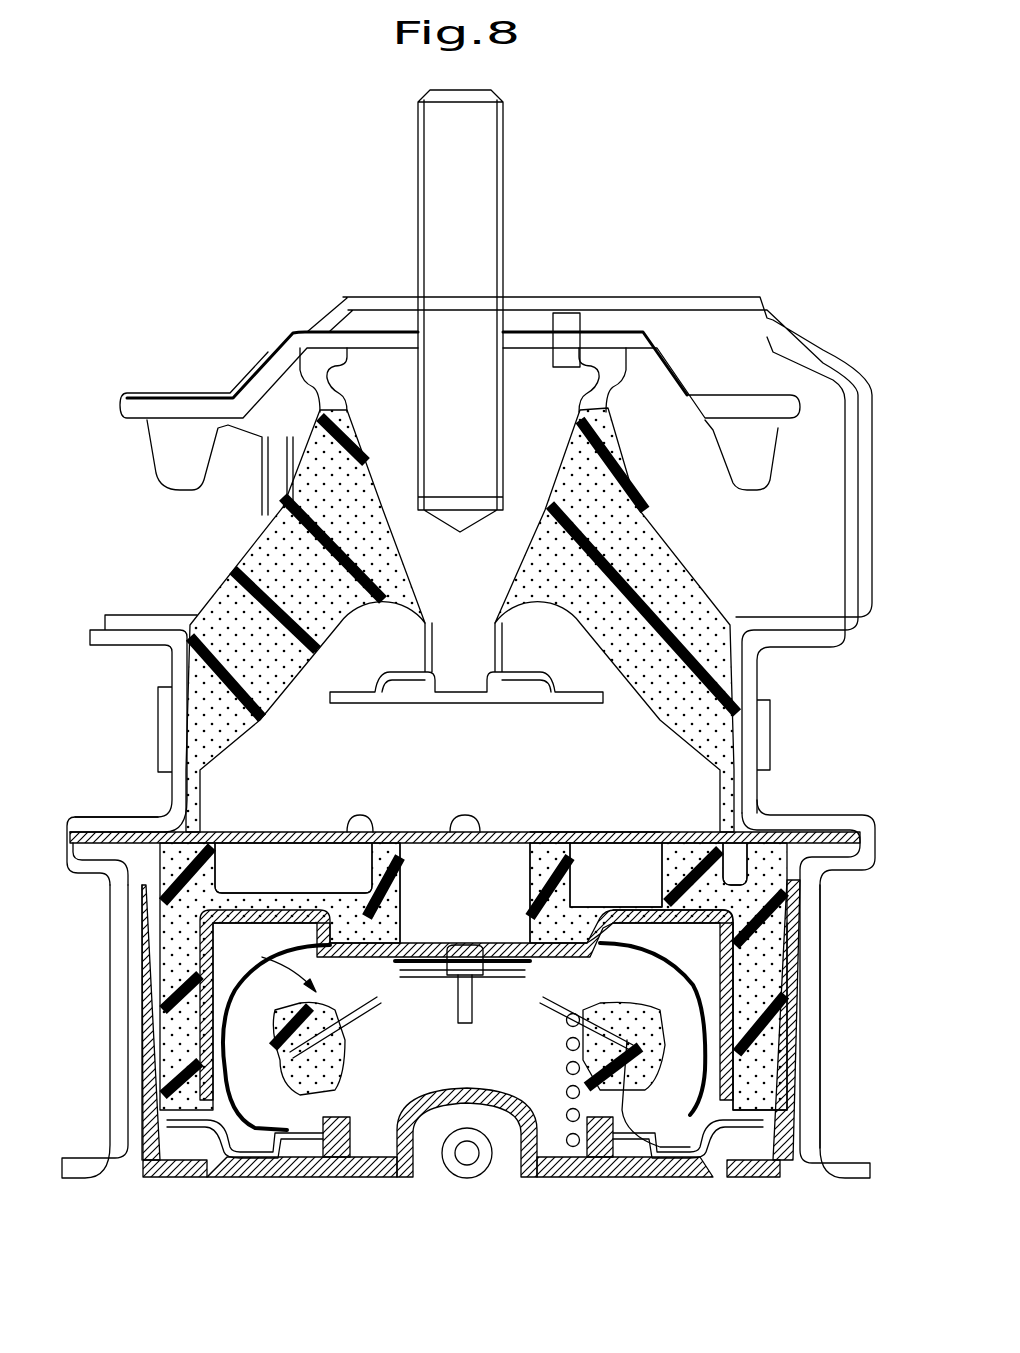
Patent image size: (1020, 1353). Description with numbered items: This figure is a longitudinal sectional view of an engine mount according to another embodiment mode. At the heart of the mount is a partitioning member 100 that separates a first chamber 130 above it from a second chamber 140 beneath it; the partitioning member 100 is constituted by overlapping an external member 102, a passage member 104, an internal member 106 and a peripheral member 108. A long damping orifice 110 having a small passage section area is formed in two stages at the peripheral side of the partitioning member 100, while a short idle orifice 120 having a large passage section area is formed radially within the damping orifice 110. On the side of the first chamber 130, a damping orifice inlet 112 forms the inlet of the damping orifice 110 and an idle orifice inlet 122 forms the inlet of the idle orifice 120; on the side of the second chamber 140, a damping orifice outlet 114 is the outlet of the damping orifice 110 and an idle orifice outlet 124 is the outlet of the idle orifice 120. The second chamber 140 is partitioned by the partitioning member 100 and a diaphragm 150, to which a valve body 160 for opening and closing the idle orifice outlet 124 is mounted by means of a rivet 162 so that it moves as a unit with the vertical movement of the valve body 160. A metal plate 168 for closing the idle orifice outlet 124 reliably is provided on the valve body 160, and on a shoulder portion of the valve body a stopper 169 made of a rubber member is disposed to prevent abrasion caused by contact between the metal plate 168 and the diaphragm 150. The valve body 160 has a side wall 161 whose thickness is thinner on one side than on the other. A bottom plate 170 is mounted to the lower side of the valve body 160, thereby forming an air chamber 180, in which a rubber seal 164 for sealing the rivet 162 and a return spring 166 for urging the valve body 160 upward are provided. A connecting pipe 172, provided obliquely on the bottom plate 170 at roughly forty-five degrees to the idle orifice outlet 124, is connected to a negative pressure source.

The partitioning member 100 is at (262, 808).
The external member 102 is at (417, 833).
The passage member 104 is at (157, 893).
The internal member 106 is at (645, 905).
The peripheral member 108 is at (795, 952).
The damping orifice 110 is at (740, 862).
The damping orifice inlet 112 is at (334, 832).
The damping orifice outlet 114 is at (797, 1050).
The idle orifice 120 is at (457, 887).
The idle orifice inlet 122 is at (590, 840).
The idle orifice outlet 124 is at (428, 945).
The first chamber 130 is at (643, 755).
The second chamber 140 is at (740, 927).
The diaphragm 150 is at (747, 978).
The valve body 160 is at (173, 980).
The side wall 161 is at (640, 1103).
The rivet 162 is at (485, 942).
The rubber seal 164 is at (485, 1025).
The return spring 166 is at (363, 1046).
The metal plate 168 is at (577, 1020).
The stopper 169 is at (633, 1013).
The bottom plate 170 is at (247, 1178).
The connecting pipe 172 is at (487, 1177).
The air chamber 180 is at (563, 1048).